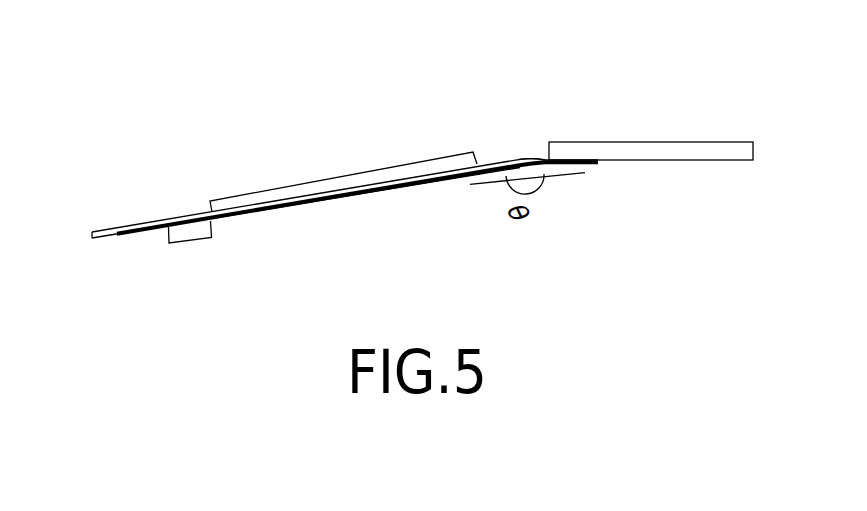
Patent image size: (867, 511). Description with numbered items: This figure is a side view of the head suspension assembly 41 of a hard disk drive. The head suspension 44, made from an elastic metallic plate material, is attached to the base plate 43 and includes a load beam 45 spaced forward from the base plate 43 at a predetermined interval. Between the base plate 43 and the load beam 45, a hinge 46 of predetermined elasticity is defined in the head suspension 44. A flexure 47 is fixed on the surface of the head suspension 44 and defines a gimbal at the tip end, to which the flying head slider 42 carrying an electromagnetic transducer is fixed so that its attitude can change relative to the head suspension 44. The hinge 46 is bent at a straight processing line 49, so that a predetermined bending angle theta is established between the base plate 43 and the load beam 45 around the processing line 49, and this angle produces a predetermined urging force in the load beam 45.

The head suspension assembly 41 is at (222, 153).
The flying head slider 42 is at (183, 243).
The base plate 43 is at (663, 141).
The head suspension 44 is at (393, 188).
The load beam 45 is at (315, 182).
The hinge 46 is at (542, 162).
The flexure 47 is at (126, 242).
The processing line 49 is at (522, 157).